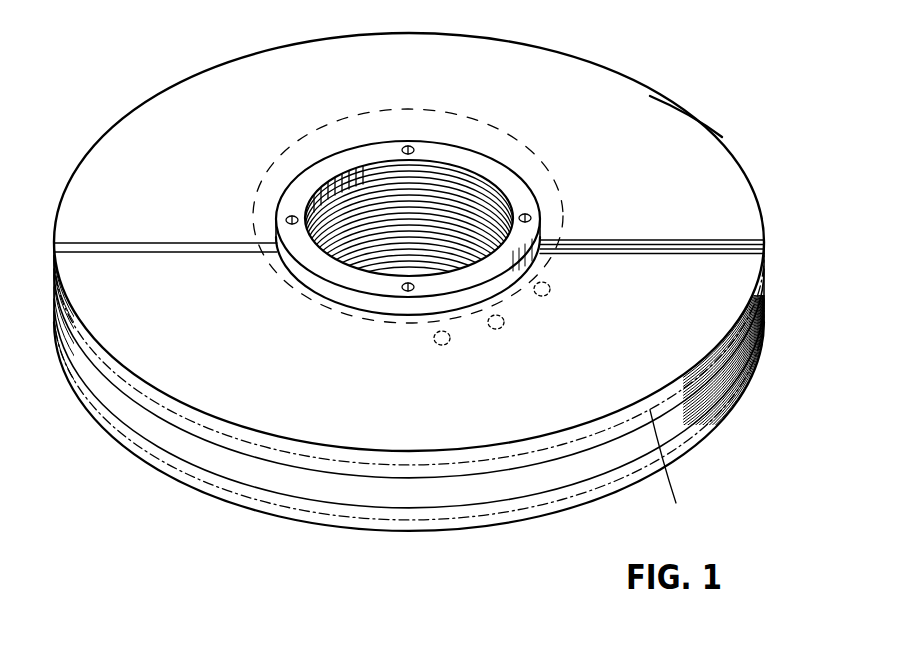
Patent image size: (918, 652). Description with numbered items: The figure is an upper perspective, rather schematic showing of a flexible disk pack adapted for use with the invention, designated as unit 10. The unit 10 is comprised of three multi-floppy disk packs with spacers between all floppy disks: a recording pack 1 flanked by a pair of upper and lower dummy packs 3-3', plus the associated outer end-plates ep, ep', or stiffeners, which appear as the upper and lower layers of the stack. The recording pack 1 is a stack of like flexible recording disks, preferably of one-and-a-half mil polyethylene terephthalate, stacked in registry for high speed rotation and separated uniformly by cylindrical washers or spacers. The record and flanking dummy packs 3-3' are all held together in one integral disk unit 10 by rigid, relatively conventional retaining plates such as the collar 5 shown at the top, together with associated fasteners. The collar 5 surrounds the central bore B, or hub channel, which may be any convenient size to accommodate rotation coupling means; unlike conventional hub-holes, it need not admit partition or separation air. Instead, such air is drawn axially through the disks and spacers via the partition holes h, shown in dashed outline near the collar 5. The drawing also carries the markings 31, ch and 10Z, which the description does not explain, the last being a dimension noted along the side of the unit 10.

The unit 10 is at (661, 77).
The top disc surface 31 is at (676, 126).
The collar 5 is at (541, 233).
The mounting holes in ring ch is at (406, 146).
The central bore B is at (402, 272).
The partition holes h is at (546, 304).
The outer end-plate ep is at (409, 360).
The outer end-plate ep' is at (409, 441).
The recording pack 1 is at (418, 503).
The dummy packs 3-3' is at (684, 472).
The stack thickness dimension 10Z is at (806, 215).